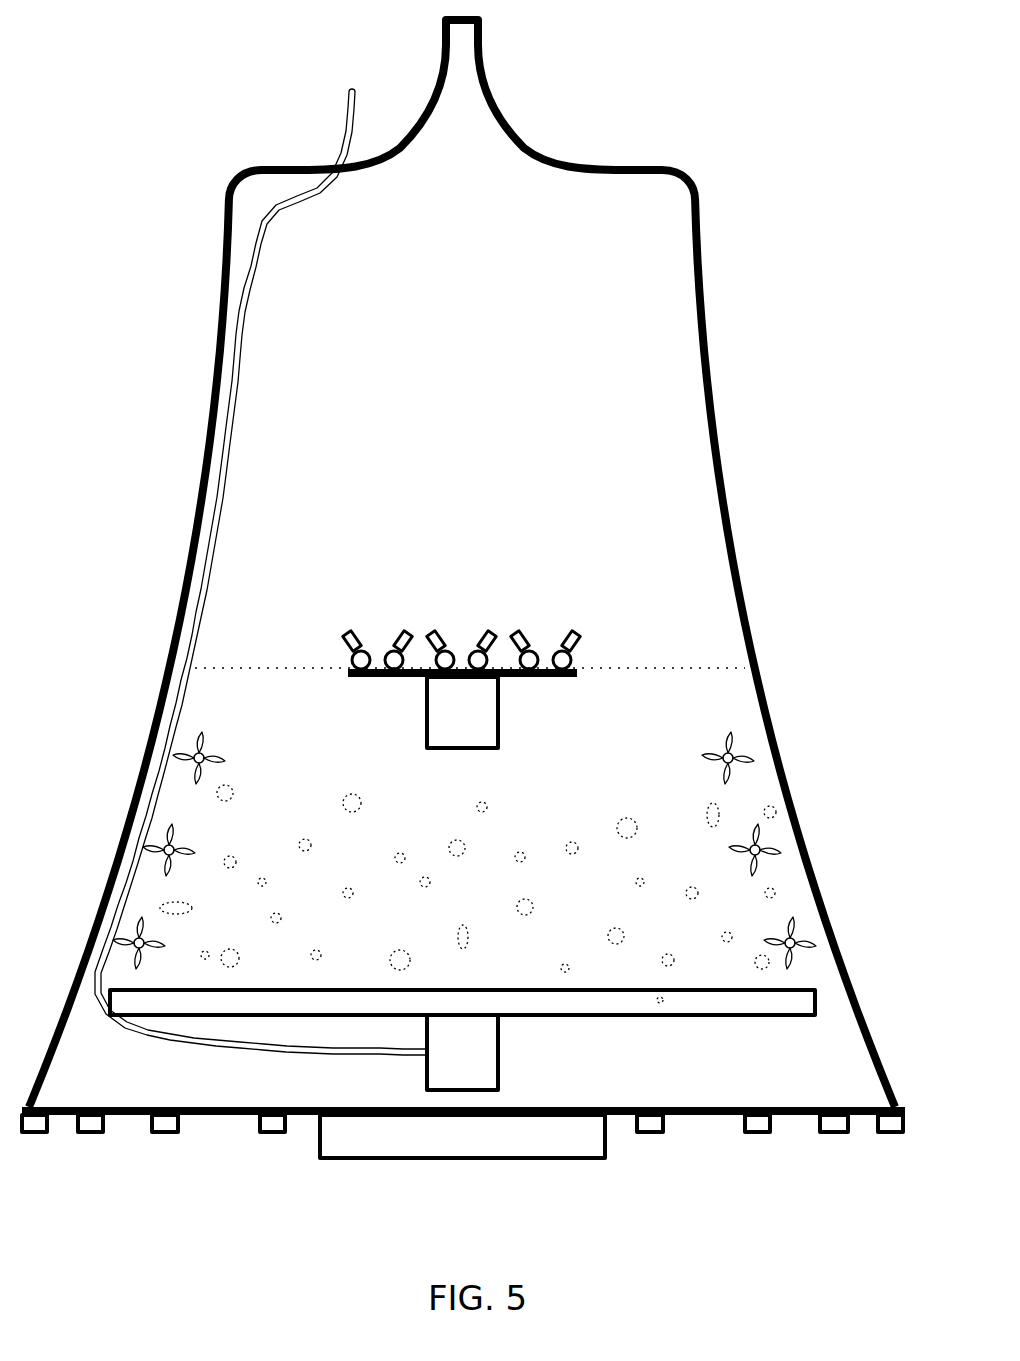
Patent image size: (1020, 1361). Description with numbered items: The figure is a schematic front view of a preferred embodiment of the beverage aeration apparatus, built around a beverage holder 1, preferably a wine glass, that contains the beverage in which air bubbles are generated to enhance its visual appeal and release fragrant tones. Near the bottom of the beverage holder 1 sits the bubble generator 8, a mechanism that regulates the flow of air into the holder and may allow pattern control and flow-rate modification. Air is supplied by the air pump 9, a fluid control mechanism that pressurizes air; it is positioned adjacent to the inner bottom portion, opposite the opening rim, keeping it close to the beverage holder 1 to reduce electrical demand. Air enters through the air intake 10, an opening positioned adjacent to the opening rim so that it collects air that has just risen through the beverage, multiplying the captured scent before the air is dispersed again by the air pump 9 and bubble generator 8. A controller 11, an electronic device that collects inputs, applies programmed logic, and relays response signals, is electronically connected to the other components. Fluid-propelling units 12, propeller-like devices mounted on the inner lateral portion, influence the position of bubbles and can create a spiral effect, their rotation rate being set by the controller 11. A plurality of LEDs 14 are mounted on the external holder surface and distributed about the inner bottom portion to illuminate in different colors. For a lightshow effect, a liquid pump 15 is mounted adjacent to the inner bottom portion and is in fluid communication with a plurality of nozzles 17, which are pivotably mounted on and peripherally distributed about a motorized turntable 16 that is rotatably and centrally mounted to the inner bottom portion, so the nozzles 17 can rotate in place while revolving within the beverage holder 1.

The beverage holder 1 is at (160, 95).
The bubble generator 8 is at (750, 1043).
The air pump 9 is at (472, 1067).
The air intake 10 is at (350, 58).
The controller 11 is at (570, 1140).
The fluid-propelling unit 12 is at (728, 758).
The light emitting diodes 14 is at (753, 1125).
The liquid pump 15 is at (479, 729).
The motorized turntable 16 is at (548, 677).
The nozzles 17 is at (350, 632).